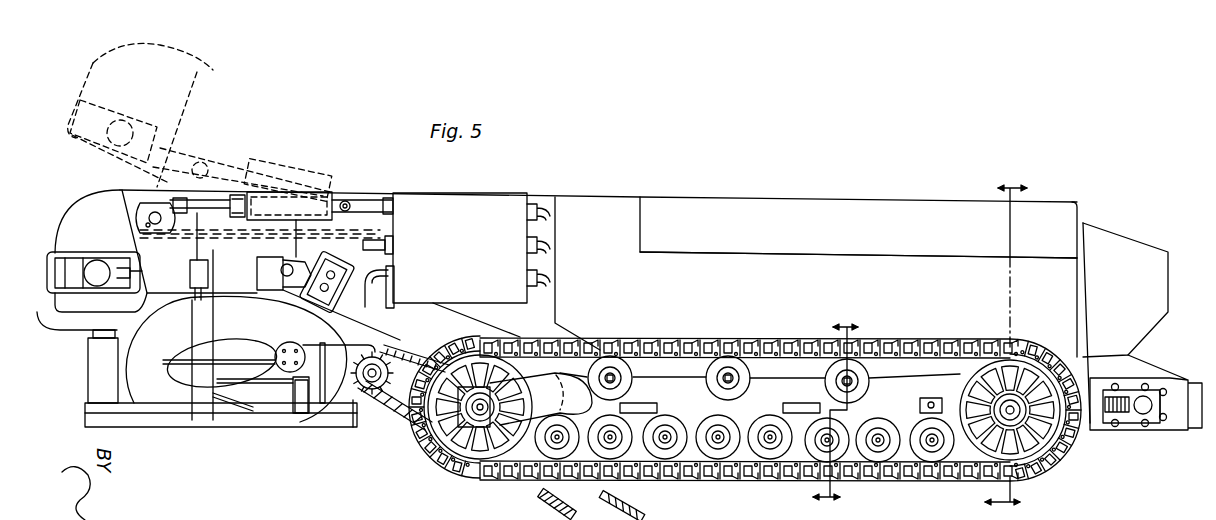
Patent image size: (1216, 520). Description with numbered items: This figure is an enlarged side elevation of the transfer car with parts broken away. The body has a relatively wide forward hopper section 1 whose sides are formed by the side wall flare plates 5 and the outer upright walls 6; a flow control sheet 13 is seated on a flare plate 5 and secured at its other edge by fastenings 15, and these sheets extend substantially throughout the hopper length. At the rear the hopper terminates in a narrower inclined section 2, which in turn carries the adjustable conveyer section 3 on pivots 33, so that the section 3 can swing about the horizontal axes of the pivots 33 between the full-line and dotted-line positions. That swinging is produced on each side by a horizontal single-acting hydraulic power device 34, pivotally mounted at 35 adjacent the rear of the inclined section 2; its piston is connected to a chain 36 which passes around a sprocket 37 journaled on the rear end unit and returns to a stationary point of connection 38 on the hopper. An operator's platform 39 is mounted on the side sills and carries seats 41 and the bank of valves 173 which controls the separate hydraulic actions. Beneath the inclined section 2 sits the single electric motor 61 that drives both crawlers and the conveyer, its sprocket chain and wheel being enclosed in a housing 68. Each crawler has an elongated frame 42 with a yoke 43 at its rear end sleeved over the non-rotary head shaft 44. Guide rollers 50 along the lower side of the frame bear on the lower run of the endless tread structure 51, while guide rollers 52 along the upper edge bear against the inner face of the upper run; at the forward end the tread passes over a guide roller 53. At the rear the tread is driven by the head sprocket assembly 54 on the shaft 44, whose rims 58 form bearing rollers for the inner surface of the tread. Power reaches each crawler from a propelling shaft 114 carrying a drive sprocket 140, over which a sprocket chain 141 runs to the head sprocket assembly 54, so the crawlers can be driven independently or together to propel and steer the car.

The hopper section 1 is at (943, 215).
The inclined section 2 is at (340, 397).
The adjustable conveyer section 3 is at (213, 70).
The side wall flare plate 5 is at (758, 257).
The outer upright wall 6 is at (1006, 342).
The flow control sheet 13 is at (612, 514).
The fastenings 15 is at (835, 412).
The pivots 33 is at (257, 271).
The hydraulic power device 34 is at (317, 192).
The pivotal mounting 35 is at (347, 205).
The chain 36 is at (163, 207).
The sprocket 37 is at (148, 234).
The stationary point of connection 38 is at (322, 232).
The platform 39 is at (247, 420).
The seats 41 is at (53, 331).
The crawler frame 42 is at (771, 373).
The yoke 43 is at (540, 373).
The head shaft 44 is at (479, 422).
The guide rollers 50 is at (755, 470).
The endless tread structure 51 is at (523, 467).
The guide rollers 52 is at (690, 352).
The guide roller 53 is at (977, 377).
The driving head sprocket assembly 54 is at (1023, 423).
The rims 58 is at (453, 360).
The electric motor 61 is at (127, 393).
The housing 68 is at (240, 404).
The propelling shaft 114 is at (387, 355).
The drive sprocket 140 is at (370, 395).
The sprocket chain 141 is at (397, 430).
The bank of valves 173 is at (213, 262).